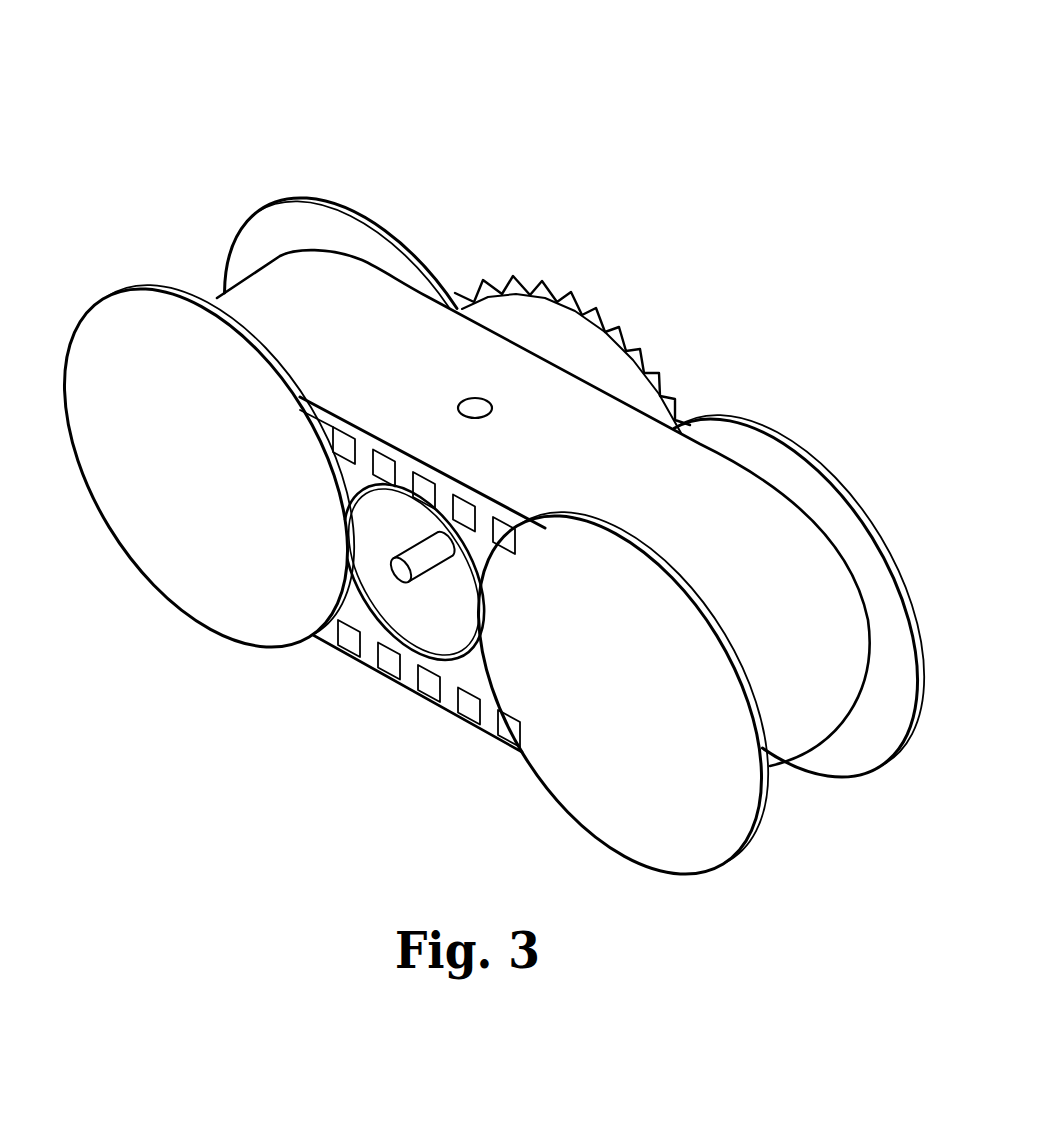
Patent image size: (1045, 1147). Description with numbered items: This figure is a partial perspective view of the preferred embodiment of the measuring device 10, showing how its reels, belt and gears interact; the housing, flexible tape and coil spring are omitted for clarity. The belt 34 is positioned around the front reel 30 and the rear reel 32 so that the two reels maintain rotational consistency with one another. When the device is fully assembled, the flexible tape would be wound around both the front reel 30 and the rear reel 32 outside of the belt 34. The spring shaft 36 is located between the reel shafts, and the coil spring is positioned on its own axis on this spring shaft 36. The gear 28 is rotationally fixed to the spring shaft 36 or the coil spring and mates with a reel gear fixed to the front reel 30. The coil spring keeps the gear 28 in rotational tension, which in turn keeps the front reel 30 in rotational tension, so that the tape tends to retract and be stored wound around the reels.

The measuring device 10 is at (676, 110).
The gear 28 is at (612, 322).
The front reel 30 is at (268, 200).
The rear reel 32 is at (817, 468).
The belt 34 is at (387, 300).
The spring shaft 36 is at (398, 582).